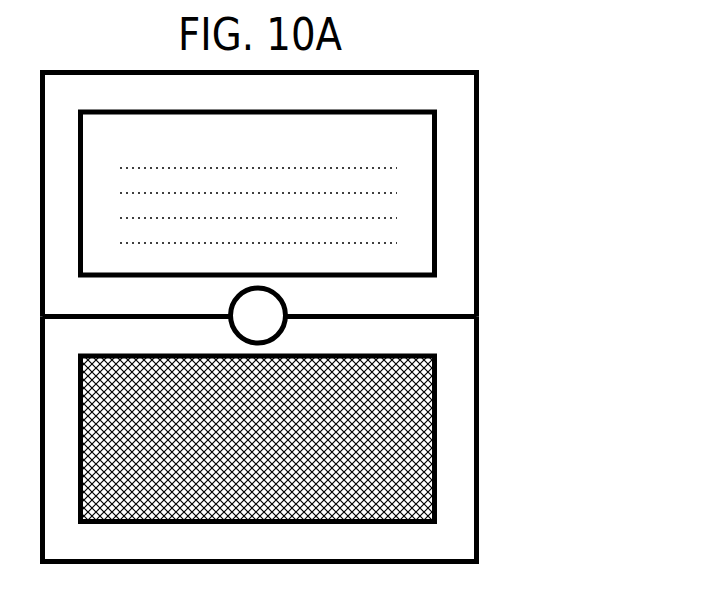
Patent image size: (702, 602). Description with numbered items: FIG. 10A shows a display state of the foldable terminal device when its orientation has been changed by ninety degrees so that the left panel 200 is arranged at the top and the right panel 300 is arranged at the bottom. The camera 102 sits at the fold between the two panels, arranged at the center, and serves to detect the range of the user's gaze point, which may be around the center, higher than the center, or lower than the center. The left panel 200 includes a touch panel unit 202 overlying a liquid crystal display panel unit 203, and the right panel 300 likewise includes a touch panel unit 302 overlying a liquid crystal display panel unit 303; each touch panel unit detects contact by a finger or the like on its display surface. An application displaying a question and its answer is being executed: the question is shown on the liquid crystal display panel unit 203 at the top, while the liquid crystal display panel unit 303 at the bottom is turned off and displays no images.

The left panel 200 is at (479, 157).
The touch panel unit 202 is at (347, 193).
The liquid crystal display panel unit 203 is at (437, 200).
The camera 102 is at (283, 300).
The right panel 300 is at (479, 417).
The touch panel unit 302 is at (347, 439).
The liquid crystal display panel unit 303 is at (437, 462).